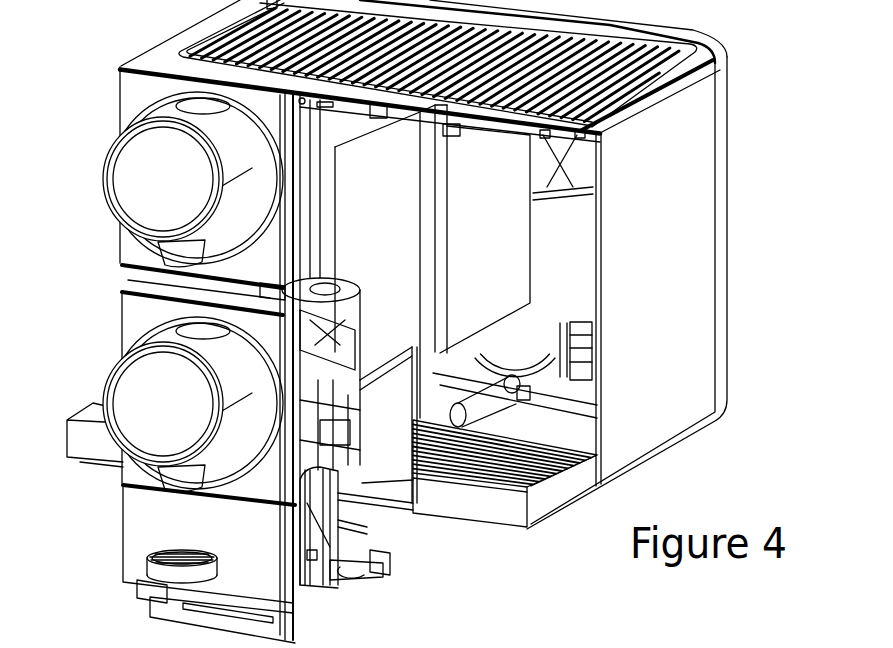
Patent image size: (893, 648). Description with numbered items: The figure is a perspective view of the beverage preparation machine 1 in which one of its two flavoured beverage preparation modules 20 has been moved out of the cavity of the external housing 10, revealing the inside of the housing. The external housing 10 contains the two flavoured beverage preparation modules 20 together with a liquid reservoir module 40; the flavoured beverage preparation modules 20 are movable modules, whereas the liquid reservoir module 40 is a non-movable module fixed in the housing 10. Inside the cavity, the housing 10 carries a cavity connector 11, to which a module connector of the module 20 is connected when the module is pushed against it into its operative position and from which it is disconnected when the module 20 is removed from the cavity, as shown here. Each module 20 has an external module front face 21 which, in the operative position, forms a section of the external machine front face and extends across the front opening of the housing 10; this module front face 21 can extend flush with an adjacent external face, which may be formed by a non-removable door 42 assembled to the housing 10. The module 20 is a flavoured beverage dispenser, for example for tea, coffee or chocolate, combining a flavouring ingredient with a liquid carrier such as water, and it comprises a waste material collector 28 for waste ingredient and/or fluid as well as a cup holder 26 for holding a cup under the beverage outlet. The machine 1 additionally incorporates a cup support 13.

The machine 1 is at (740, 41).
The external housing 10 is at (697, 157).
The cavity connector 11 is at (573, 321).
The cup support 13 is at (450, 507).
The flavoured beverage preparation module 20 is at (145, 143).
The module front face 21 is at (137, 97).
The cup holder 26 is at (153, 573).
The waste material collector 28 is at (290, 573).
The liquid reservoir module 40 is at (313, 115).
The non-removable door 42 is at (376, 222).